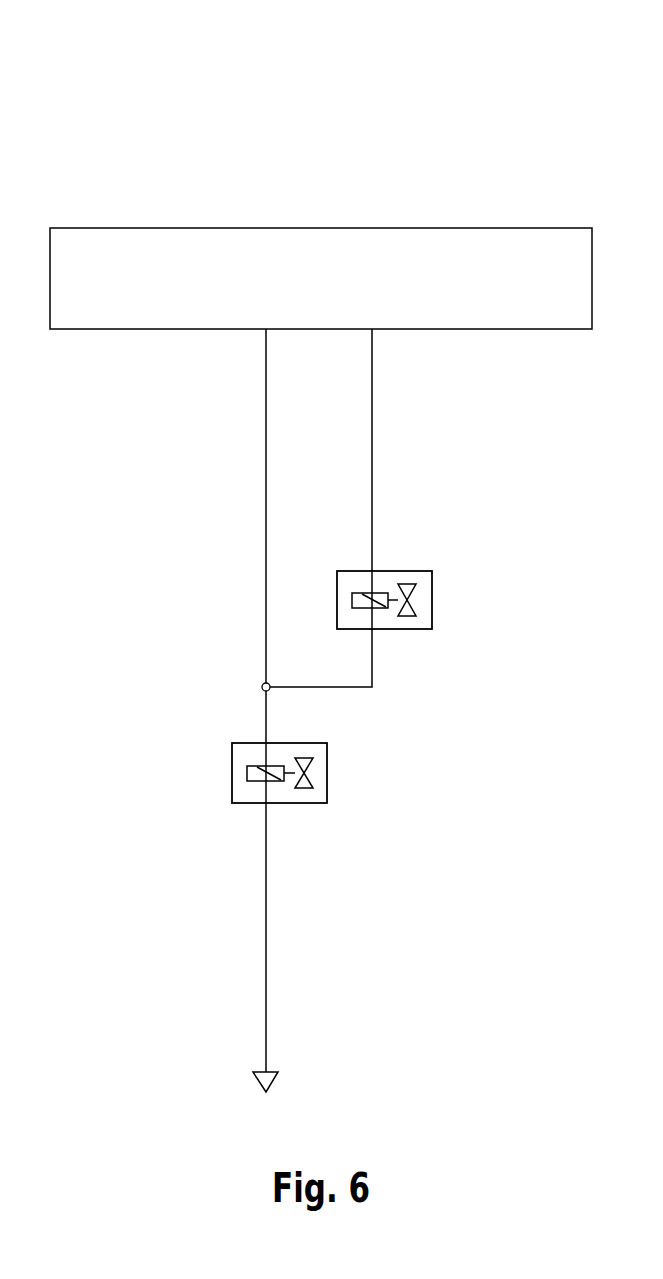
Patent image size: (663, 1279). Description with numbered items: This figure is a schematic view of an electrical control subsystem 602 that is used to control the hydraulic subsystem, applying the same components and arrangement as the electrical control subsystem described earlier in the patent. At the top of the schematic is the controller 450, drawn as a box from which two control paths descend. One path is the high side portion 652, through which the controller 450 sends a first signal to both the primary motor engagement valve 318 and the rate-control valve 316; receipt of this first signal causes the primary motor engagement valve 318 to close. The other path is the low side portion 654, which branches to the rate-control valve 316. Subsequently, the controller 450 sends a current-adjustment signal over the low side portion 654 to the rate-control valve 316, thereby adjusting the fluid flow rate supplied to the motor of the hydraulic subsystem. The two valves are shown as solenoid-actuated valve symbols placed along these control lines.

The electrical control subsystem 602 is at (498, 135).
The controller 450 is at (198, 228).
The high side portion 652 is at (266, 450).
The low side portion 654 is at (372, 475).
The rate-control valve 316 is at (413, 630).
The primary motor engagement valve 318 is at (232, 772).